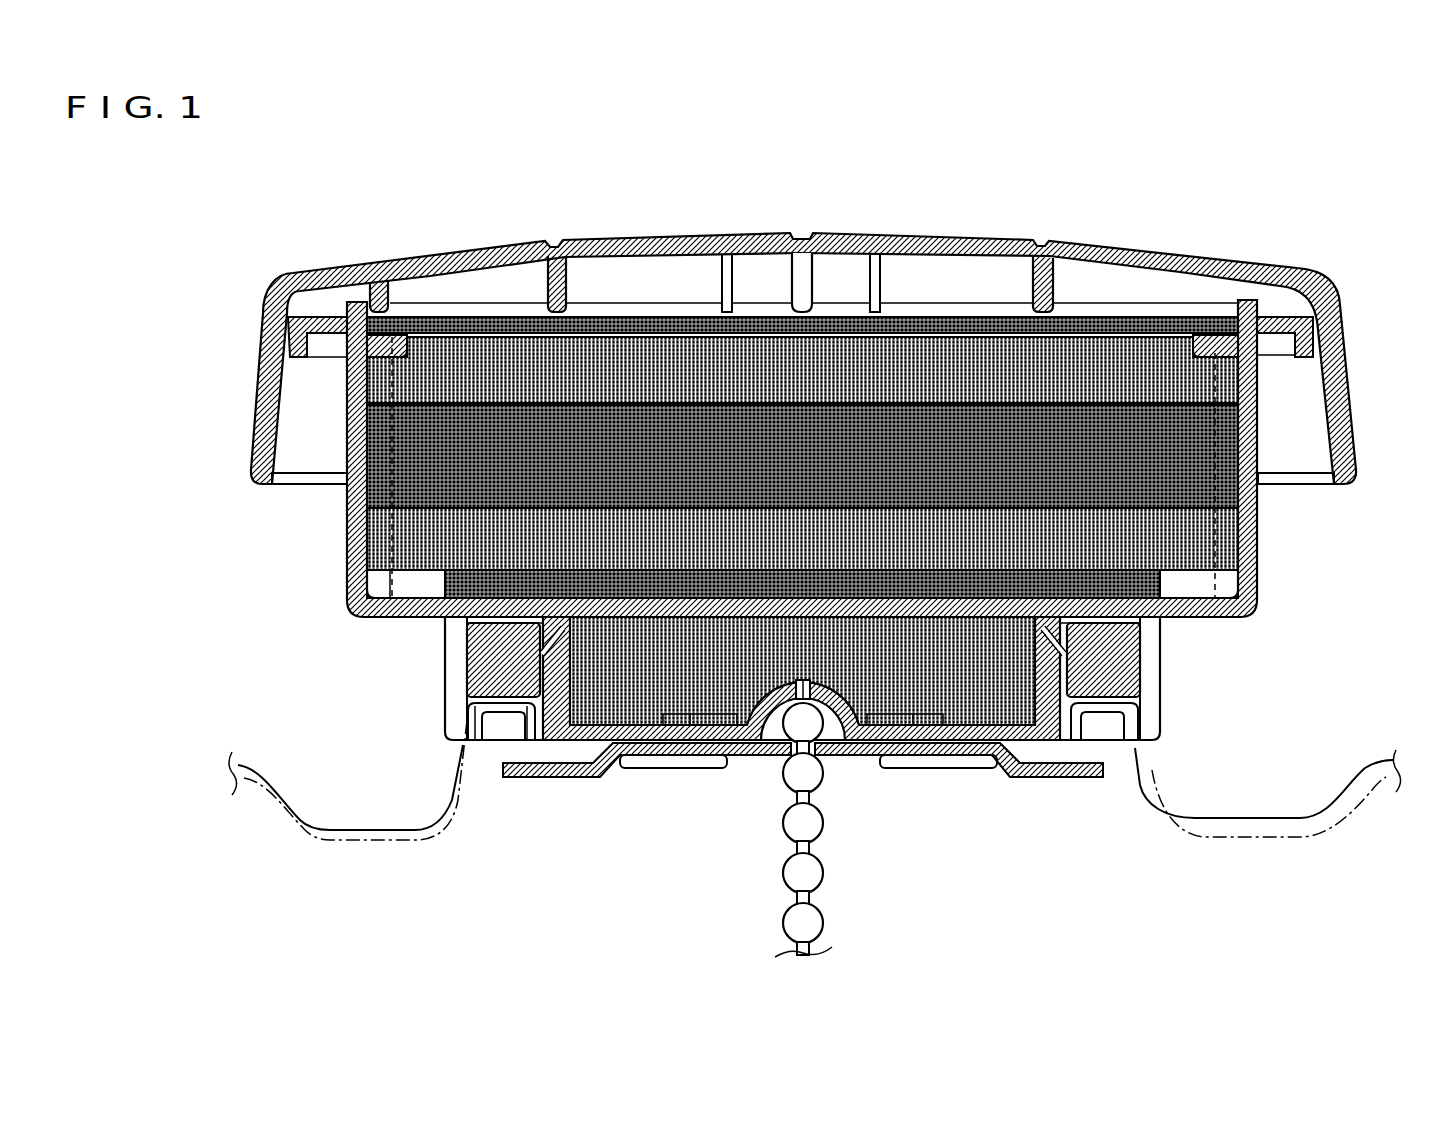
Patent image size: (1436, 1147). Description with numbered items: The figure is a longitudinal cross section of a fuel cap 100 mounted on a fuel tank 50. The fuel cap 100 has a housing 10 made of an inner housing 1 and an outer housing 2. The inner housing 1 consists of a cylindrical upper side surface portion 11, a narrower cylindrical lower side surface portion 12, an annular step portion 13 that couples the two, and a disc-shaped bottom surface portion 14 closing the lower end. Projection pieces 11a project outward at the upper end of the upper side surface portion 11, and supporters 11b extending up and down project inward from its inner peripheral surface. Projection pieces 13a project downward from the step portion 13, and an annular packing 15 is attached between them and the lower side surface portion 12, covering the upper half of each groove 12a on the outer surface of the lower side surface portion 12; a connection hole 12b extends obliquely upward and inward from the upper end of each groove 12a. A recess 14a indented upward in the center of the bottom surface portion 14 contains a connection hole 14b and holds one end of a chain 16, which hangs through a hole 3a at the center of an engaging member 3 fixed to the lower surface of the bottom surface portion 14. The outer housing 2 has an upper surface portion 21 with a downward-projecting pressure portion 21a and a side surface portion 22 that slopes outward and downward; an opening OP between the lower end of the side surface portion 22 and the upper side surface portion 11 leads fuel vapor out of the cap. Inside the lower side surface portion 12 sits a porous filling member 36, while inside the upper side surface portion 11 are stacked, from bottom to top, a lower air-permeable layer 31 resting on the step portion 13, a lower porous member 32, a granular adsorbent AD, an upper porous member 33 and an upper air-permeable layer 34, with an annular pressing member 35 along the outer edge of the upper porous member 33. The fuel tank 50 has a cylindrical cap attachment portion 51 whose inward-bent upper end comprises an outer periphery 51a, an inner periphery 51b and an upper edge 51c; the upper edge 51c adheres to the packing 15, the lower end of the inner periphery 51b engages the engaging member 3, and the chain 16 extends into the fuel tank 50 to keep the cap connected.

The fuel cap 100 is at (1358, 208).
The housing 10 is at (137, 368).
The inner housing 1 is at (347, 417).
The outer housing 2 is at (257, 371).
The upper side surface portion 11 is at (347, 555).
The projection pieces 11a is at (297, 312).
The supporters 11b is at (375, 578).
The lower side surface portion 12 is at (520, 640).
The grooves 12a is at (490, 706).
The connection hole 12b is at (578, 645).
The step portion 13 is at (398, 614).
The projection pieces 13a is at (452, 640).
The bottom surface portion 14 is at (570, 712).
The recess 14a is at (790, 745).
The connection hole 14b is at (825, 745).
The packing 15 is at (1125, 662).
The chain 16 is at (793, 871).
The upper surface portion 21 is at (740, 233).
The pressure portion 21a is at (568, 277).
The side surface portion 22 is at (290, 325).
The engaging member 3 is at (1033, 777).
The hole 3a is at (810, 700).
The lower air-permeable layer 31 is at (1155, 588).
The lower porous member 32 is at (1222, 543).
The upper porous member 33 is at (1227, 373).
The upper air-permeable layer 34 is at (1085, 318).
The pressing member 35 is at (1200, 345).
The porous filling member 36 is at (718, 700).
The adsorbent AD is at (1227, 437).
The opening OP is at (305, 460).
The fuel tank 50 is at (252, 766).
The cap attachment portion 51 is at (455, 893).
The outer periphery 51a is at (490, 705).
The inner periphery 51b is at (473, 712).
The upper edge 51c is at (527, 720).